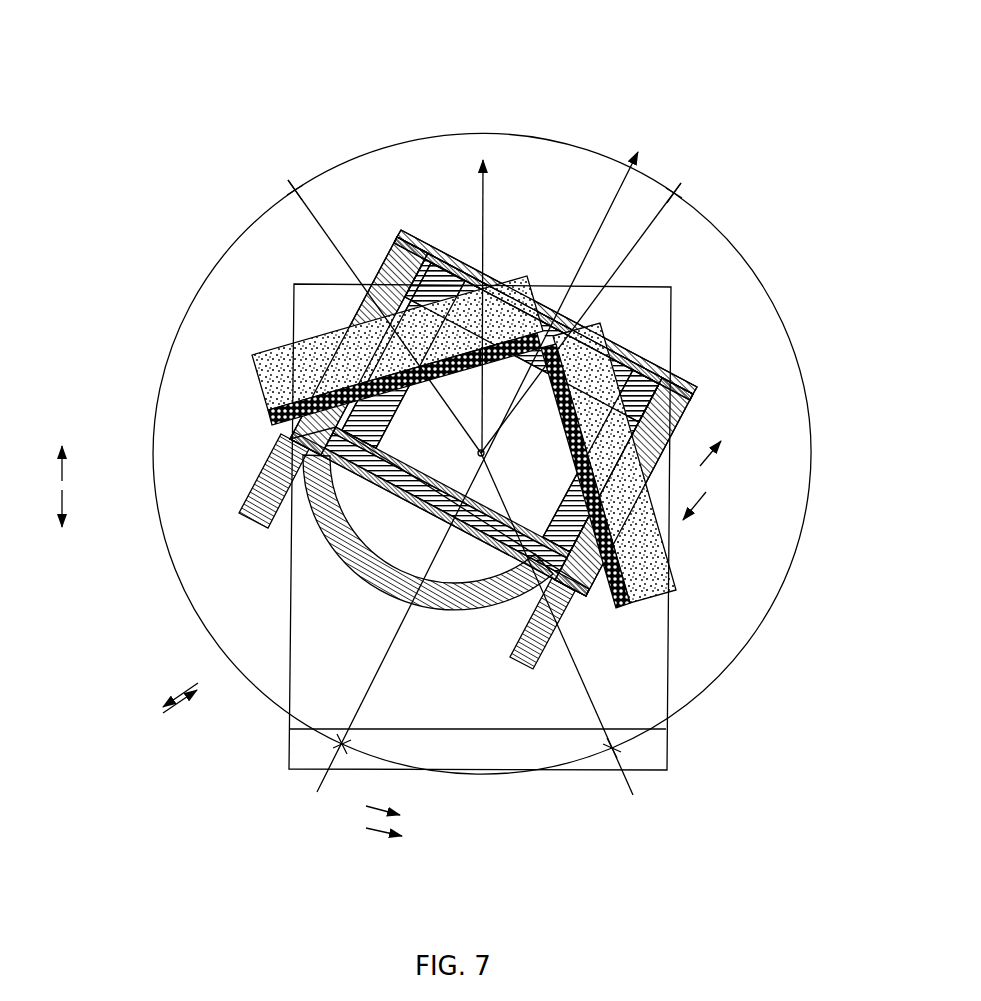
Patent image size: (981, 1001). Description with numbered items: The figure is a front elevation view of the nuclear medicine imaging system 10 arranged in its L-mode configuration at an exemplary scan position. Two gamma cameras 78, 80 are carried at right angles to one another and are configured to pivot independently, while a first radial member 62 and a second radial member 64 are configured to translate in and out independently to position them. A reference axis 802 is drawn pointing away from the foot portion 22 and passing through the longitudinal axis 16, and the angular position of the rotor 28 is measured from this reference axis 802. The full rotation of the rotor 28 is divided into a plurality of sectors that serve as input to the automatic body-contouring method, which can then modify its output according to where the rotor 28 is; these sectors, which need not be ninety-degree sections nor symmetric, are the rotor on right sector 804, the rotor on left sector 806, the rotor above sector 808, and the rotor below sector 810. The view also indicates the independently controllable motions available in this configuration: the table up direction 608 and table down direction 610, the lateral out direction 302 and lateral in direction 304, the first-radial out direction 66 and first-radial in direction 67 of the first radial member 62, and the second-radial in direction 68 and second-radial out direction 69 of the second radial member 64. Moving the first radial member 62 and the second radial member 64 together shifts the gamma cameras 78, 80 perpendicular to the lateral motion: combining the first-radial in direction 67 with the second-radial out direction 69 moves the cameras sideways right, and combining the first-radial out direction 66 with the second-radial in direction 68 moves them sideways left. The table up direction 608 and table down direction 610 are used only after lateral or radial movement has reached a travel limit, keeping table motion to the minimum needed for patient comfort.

The nuclear medicine imaging system 10 is at (276, 48).
The longitudinal axis 16 is at (486, 455).
The foot portion 22 is at (487, 765).
The rotor 28 is at (461, 614).
The first radial member 62 is at (437, 262).
The second radial member 64 is at (628, 355).
The Radial-1 out direction 66 is at (176, 705).
The Radial-1 in direction 67 is at (186, 690).
The Radial-2 in direction 68 is at (388, 838).
The Radial-2 out direction 69 is at (378, 805).
The gamma camera 78 is at (265, 385).
The gamma camera 80 is at (678, 576).
The lateral out direction 302 is at (718, 462).
The lateral in direction 304 is at (700, 503).
The table up direction 608 is at (66, 470).
The table down direction 610 is at (66, 505).
The reference axis 802 is at (485, 205).
The rotor on right sector 804 is at (793, 560).
The rotor on left sector 806 is at (228, 249).
The rotor above sector 808 is at (372, 150).
The rotor below sector 810 is at (468, 774).